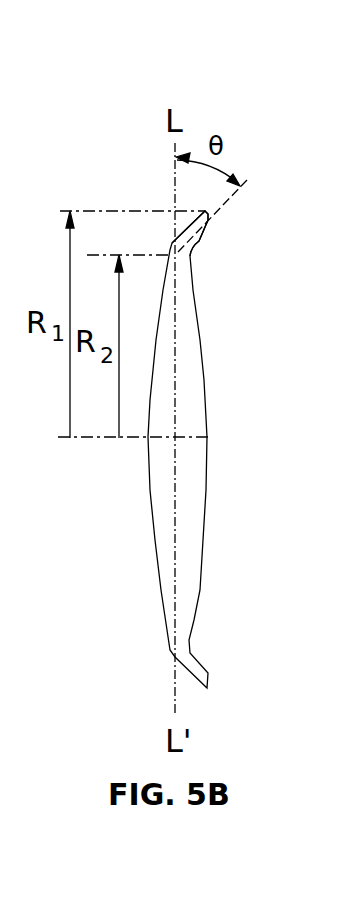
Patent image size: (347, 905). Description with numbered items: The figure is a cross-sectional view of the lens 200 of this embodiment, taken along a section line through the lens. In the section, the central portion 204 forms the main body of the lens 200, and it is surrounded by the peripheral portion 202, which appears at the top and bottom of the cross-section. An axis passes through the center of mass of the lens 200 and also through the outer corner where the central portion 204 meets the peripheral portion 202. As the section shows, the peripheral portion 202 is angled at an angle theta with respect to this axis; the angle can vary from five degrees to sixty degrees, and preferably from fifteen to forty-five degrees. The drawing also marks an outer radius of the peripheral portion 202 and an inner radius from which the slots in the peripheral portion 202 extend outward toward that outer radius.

The lens 200 is at (230, 80).
The peripheral portion 202 is at (198, 240).
The central portion 204 is at (197, 375).